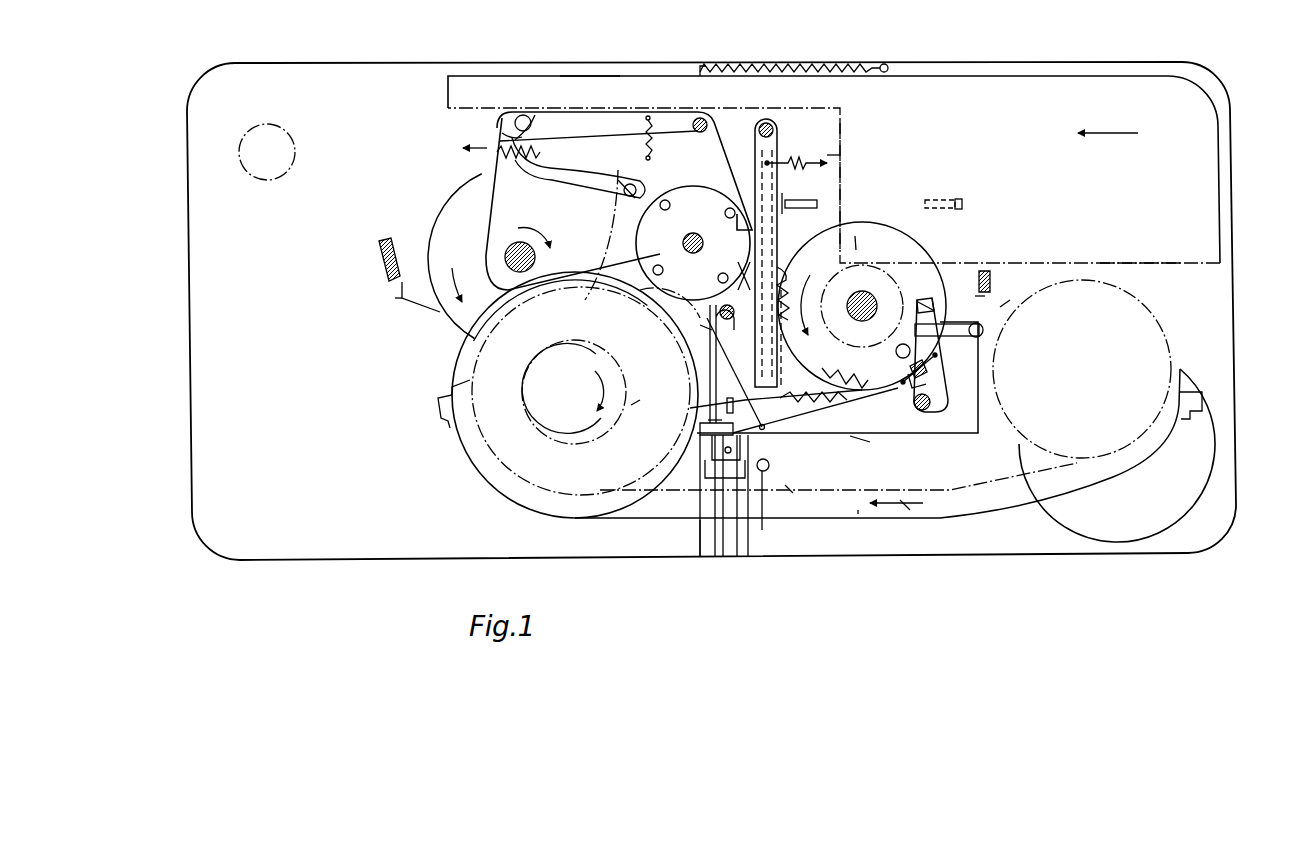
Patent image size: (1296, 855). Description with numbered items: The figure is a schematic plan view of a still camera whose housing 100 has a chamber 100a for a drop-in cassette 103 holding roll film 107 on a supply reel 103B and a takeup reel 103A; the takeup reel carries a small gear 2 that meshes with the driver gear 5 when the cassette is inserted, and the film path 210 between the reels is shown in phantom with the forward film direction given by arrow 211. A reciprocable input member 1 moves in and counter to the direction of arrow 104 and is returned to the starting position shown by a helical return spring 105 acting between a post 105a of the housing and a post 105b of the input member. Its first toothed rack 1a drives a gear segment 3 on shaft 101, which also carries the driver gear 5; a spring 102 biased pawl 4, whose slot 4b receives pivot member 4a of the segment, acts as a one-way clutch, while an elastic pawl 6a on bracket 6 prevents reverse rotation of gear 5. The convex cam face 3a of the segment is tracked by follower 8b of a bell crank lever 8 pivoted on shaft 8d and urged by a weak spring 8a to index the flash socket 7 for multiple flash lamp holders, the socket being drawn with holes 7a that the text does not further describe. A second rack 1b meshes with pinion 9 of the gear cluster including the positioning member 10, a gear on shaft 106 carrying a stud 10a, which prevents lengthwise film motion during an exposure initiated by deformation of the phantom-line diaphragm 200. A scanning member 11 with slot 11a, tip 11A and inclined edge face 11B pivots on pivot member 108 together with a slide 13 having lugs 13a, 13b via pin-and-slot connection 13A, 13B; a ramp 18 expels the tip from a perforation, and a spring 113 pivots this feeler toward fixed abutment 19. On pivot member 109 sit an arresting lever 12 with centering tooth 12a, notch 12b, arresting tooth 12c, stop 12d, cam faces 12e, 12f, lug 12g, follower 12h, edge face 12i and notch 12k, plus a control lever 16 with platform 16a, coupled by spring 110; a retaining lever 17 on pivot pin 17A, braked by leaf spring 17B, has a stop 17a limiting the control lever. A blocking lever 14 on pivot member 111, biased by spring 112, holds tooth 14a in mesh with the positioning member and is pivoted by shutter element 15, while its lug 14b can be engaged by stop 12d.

The input member 1 is at (1170, 76).
The first elongated toothed rack 1a is at (582, 76).
The second toothed rack 1b is at (1142, 262).
The small gear 2 is at (470, 445).
The gear segment 3 is at (490, 200).
The convex cam face 3a is at (497, 126).
The pawl 4 is at (530, 120).
The pivot member 4a is at (616, 205).
The slot 4b is at (615, 188).
The driver gear 5 is at (440, 223).
The bracket 6 is at (380, 250).
The elastic pawl 6a is at (402, 298).
The socket 7 is at (693, 186).
The gear plate holes 7a is at (671, 206).
The bell crank lever 8 is at (628, 112).
The weak helical spring 8a is at (652, 122).
The follower 8b is at (520, 118).
The shaft 8d is at (708, 122).
The pinion 9 is at (880, 393).
The positioning member 10 is at (848, 215).
The disengaging projection 10a is at (927, 205).
The scanning member 11 is at (708, 452).
The elongated slot 11a is at (712, 330).
The tip 11A is at (740, 545).
The inclined edge face 11B is at (700, 540).
The arresting lever 12 is at (875, 425).
The centering tooth 12a is at (752, 545).
The notch 12b is at (712, 455).
The arresting tooth 12c is at (838, 374).
The stop 12d is at (712, 430).
The cam face 12e is at (860, 440).
The cam face 12f is at (770, 468).
The distancing lug 12g is at (912, 352).
The follower 12h is at (862, 290).
The edge face 12i is at (763, 500).
The notch 12k is at (840, 400).
The slide 13 is at (716, 355).
The lug 13a is at (716, 420).
The lug 13b is at (723, 545).
The pin 13A is at (720, 302).
The slot 13B is at (636, 405).
The blocking lever 14 is at (780, 150).
The tooth 14a is at (790, 290).
The bent-over lug 14b is at (730, 268).
The shutter element 15 is at (802, 200).
The control lever 16 is at (955, 430).
The platform 16a is at (930, 297).
The retaining lever 17 is at (992, 295).
The stop 17a is at (985, 275).
The pivot pin 17A is at (992, 328).
The leaf spring 17B is at (1000, 307).
The ramp 18 is at (700, 497).
The fixed abutment 19 is at (780, 492).
The housing 100 is at (1232, 124).
The chamber 100a is at (1196, 390).
The shaft 101 is at (505, 257).
The helical spring 102 is at (482, 156).
The cassette 103 is at (457, 363).
The takeup reel 103A is at (440, 388).
The supply reel 103B is at (1157, 322).
The arrow 104 is at (1120, 135).
The helical return spring 105 is at (775, 64).
The post 105a is at (884, 64).
The post 105b is at (700, 66).
The shaft 106 is at (858, 236).
The roll film 107 is at (793, 493).
The pivot member 108 is at (700, 318).
The pivot member 109 is at (925, 412).
The helical spring 110 is at (930, 380).
The pivot member 111 is at (776, 128).
The helical spring 112 is at (836, 155).
The helical spring 113 is at (727, 405).
The diaphragm 200 is at (267, 180).
The film path 210 is at (858, 512).
The arrow 211 is at (905, 505).